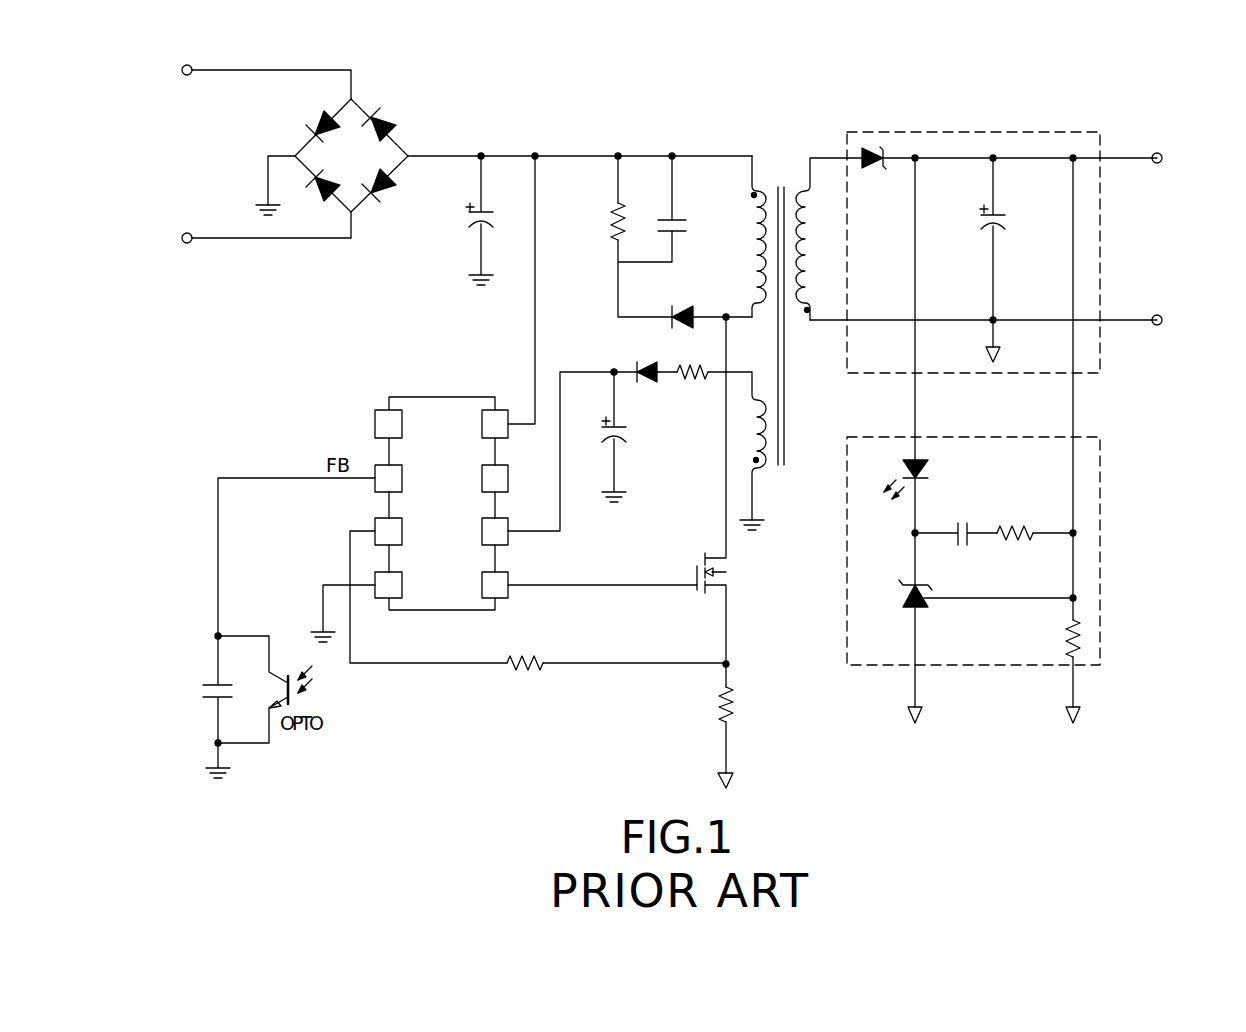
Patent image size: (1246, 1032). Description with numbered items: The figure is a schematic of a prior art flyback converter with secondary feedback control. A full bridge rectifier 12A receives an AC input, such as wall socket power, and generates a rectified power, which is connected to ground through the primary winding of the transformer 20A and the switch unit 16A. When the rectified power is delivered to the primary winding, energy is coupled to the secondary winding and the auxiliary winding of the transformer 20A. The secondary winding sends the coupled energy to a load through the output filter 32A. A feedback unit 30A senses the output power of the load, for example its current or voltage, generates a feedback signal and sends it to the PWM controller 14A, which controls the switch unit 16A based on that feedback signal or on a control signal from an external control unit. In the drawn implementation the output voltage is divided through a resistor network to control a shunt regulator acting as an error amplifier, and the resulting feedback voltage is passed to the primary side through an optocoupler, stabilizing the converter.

The full bridge rectifier 12A is at (372, 112).
The PWM controller 14A is at (442, 400).
The switch unit 16A is at (697, 563).
The transformer 20A is at (779, 165).
The feedback unit 30A is at (1093, 553).
The output filter 32A is at (975, 132).